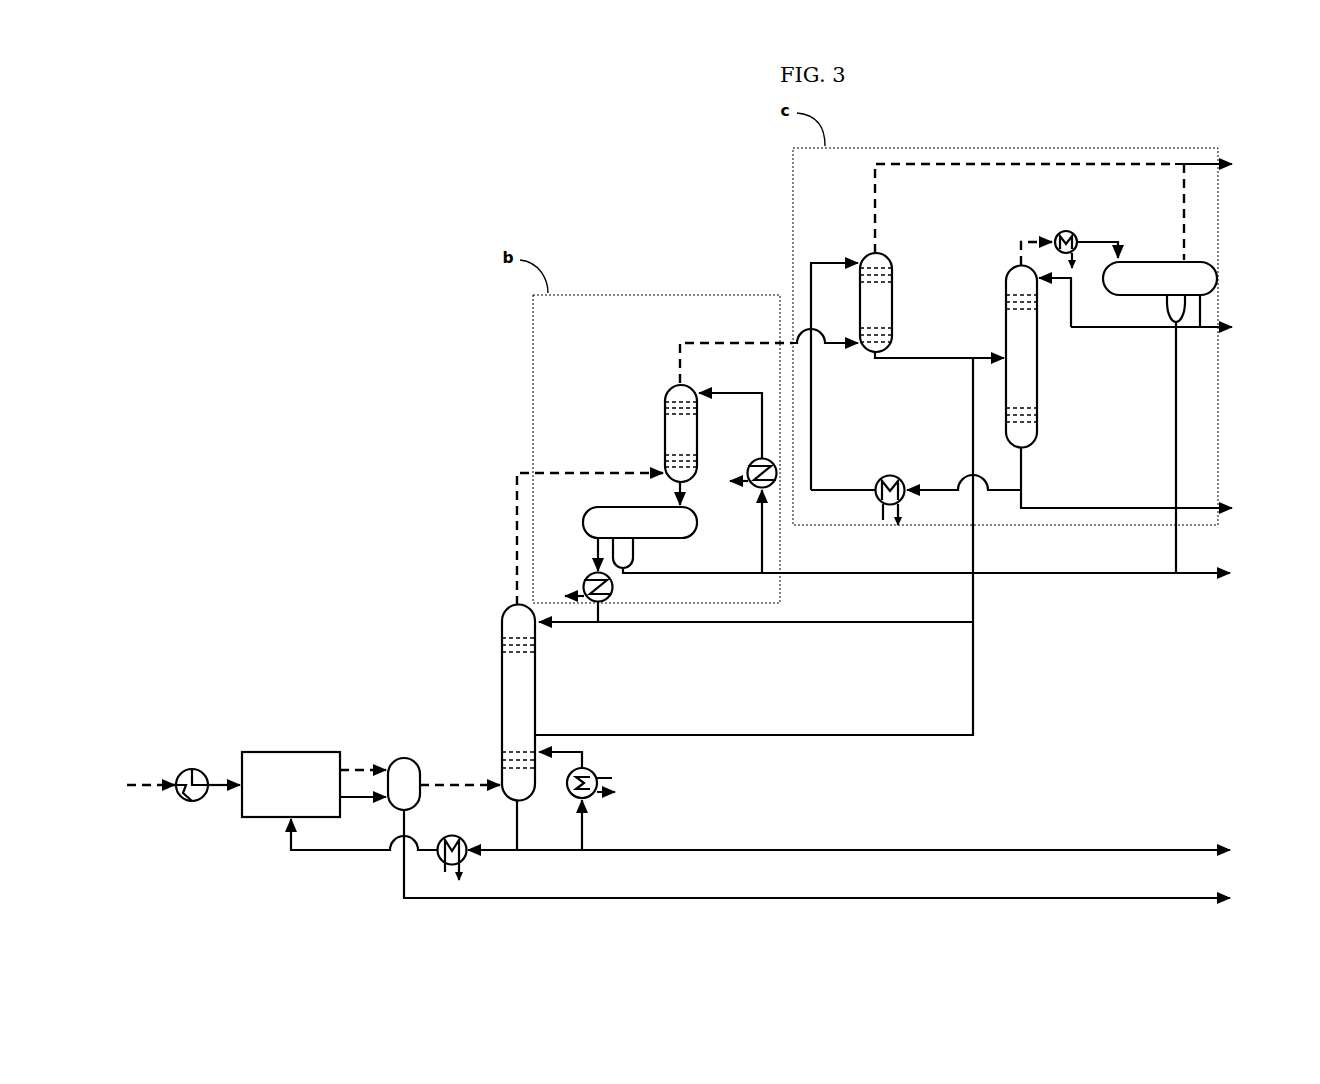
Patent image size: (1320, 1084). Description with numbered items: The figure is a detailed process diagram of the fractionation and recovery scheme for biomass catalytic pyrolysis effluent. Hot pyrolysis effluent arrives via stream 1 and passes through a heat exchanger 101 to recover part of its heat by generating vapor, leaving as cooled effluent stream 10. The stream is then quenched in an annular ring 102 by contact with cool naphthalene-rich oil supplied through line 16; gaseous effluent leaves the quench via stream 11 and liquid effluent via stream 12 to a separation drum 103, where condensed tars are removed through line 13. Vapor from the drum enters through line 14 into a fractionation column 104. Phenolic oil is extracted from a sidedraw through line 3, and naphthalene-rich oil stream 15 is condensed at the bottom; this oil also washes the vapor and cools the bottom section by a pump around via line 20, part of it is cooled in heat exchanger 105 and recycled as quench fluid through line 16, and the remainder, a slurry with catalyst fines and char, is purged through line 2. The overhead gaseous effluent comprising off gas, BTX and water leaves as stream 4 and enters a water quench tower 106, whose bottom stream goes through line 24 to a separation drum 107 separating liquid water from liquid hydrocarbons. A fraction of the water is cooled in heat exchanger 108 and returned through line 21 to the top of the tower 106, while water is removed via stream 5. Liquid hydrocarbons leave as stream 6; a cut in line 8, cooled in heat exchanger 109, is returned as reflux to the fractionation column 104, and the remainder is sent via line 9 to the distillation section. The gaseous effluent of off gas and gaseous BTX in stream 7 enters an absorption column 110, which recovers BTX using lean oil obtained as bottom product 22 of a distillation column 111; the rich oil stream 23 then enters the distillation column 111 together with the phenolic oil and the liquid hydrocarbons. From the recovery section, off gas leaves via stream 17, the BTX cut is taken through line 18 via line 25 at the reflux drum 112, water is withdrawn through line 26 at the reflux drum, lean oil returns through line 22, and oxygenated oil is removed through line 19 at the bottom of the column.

The pyrolysis effluent stream 1 is at (165, 785).
The naphthalene-rich oil purge line 2 is at (1200, 848).
The phenolic oil line 3 is at (697, 735).
The gaseous effluent stream 4 is at (585, 473).
The water effluent stream 5 is at (1087, 573).
The liquid hydrocarbon effluent stream 6 is at (593, 557).
The gaseous BTX and off gas stream 7 is at (730, 343).
The reflux line 8 is at (582, 624).
The liquid hydrocarbon cut line 9 is at (697, 624).
The cooled effluent stream 10 is at (226, 785).
The quench gaseous effluent stream 11 is at (372, 770).
The quench liquid effluent stream 12 is at (372, 800).
The tar removal line 13 is at (1200, 900).
The vapor feed line 14 is at (470, 782).
The naphthalene-rich oil stream 15 is at (517, 833).
The quench oil recycle line 16 is at (315, 852).
The off gas stream 17 is at (1200, 163).
The BTX product line 18 is at (1213, 333).
The oxygenated oil line 19 is at (1220, 508).
The pump around line 20 is at (585, 805).
The water recycle line 21 is at (705, 393).
The lean oil line 22 is at (850, 262).
The rich oil stream 23 is at (925, 358).
The quench tower bottoms line 24 is at (685, 490).
The reflux drum BTX line 25 is at (1203, 312).
The reflux drum water line 26 is at (1170, 473).
The heat exchanger 101 is at (192, 768).
The annular ring 102 is at (305, 752).
The separation drum 103 is at (405, 758).
The fractionation column 104 is at (502, 620).
The heat exchanger 105 is at (462, 860).
The water quench tower 106 is at (665, 425).
The separation drum 107 is at (697, 535).
The heat exchanger 108 is at (750, 462).
The heat exchanger 109 is at (614, 592).
The absorption column 110 is at (892, 277).
The distillation column 111 is at (1037, 408).
The reflux drum 112 is at (1163, 262).